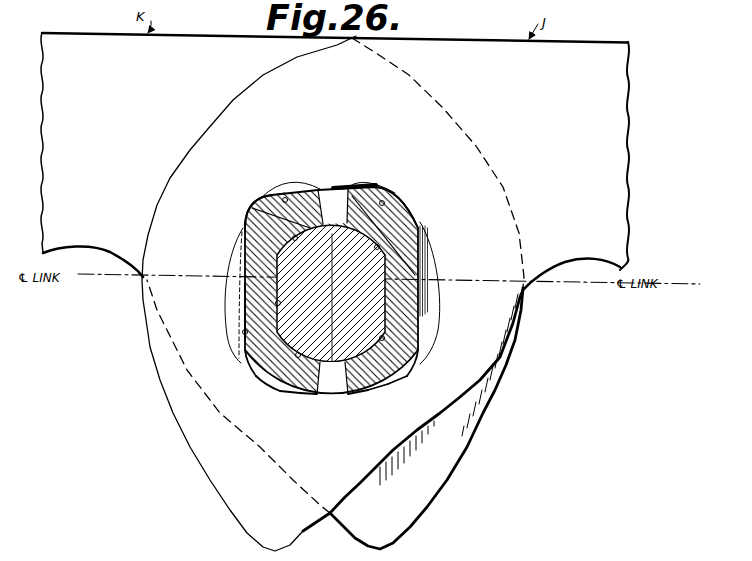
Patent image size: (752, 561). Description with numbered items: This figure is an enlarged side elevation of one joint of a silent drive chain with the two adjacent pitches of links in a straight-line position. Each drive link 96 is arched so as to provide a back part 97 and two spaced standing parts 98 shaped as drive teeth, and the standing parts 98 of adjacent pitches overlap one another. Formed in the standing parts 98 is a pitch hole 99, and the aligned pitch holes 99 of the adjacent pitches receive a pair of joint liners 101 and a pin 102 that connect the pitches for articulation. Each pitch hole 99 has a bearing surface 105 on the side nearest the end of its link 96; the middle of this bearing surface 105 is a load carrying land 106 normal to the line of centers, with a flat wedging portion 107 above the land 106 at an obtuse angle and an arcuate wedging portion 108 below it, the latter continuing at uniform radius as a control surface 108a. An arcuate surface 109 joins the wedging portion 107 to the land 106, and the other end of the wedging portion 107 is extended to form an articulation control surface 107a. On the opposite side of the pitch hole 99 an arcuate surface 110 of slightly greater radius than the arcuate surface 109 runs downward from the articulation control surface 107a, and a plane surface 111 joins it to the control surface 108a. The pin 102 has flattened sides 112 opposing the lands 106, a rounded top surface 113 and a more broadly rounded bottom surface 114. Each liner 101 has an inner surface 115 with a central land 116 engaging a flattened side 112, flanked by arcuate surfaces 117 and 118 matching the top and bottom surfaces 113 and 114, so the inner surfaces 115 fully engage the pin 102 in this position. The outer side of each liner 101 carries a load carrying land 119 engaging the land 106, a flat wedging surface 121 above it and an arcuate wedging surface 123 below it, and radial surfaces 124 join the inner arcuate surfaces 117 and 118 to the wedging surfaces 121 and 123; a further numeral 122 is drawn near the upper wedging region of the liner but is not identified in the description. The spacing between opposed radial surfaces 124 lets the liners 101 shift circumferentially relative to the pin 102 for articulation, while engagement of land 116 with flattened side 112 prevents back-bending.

The drive link 96 is at (60, 117).
The back part 97 is at (187, 43).
The standing part 98 is at (365, 523).
The pitch hole 99 is at (236, 248).
The joint liner 101 is at (260, 370).
The pin 102 is at (300, 294).
The bearing surface 105 is at (327, 284).
The load carrying land 106 is at (237, 282).
The flat wedging portion 107 is at (306, 180).
The articulation control surface 107a is at (302, 176).
The arcuate wedging portion 108 is at (298, 402).
The control surface 108a is at (255, 360).
The arcuate surface 109 is at (243, 222).
The arcuate surface 110 is at (272, 192).
The plane surface 111 is at (240, 230).
The flattened side 112 is at (268, 316).
The top surface 113 is at (247, 213).
The bottom surface 114 is at (268, 385).
The inner surface 115 is at (237, 323).
The land 116 is at (233, 333).
The arcuate surface 117 is at (262, 204).
The arcuate surface 118 is at (279, 392).
The load carrying land 119 is at (235, 349).
The flat wedging surface 121 is at (288, 190).
The key seat 122 is at (265, 197).
The arcuate wedging surface 123 is at (313, 403).
The radial surface 124 is at (335, 191).